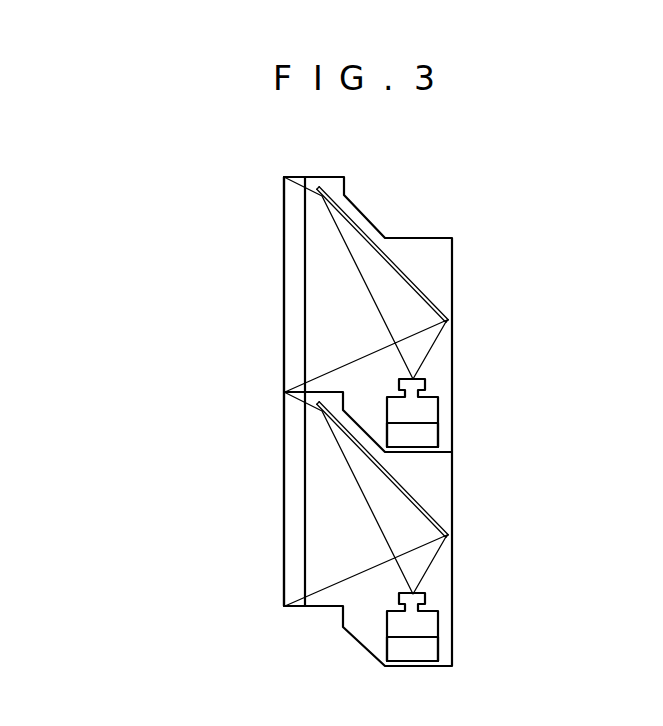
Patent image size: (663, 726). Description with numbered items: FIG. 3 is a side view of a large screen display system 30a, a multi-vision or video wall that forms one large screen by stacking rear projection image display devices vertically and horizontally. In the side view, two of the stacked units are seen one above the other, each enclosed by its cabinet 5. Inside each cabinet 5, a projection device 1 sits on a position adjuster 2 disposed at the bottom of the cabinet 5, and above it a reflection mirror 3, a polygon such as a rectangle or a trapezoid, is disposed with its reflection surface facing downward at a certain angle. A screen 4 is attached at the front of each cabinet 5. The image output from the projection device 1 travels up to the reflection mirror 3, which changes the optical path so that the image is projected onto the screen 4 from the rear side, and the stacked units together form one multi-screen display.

The large screen display system 30a is at (128, 176).
The projection device 1 is at (423, 409).
The position adjuster 2 is at (423, 440).
The reflection mirror 3 is at (386, 252).
The screen 4 is at (295, 227).
The cabinet 5 is at (453, 266).